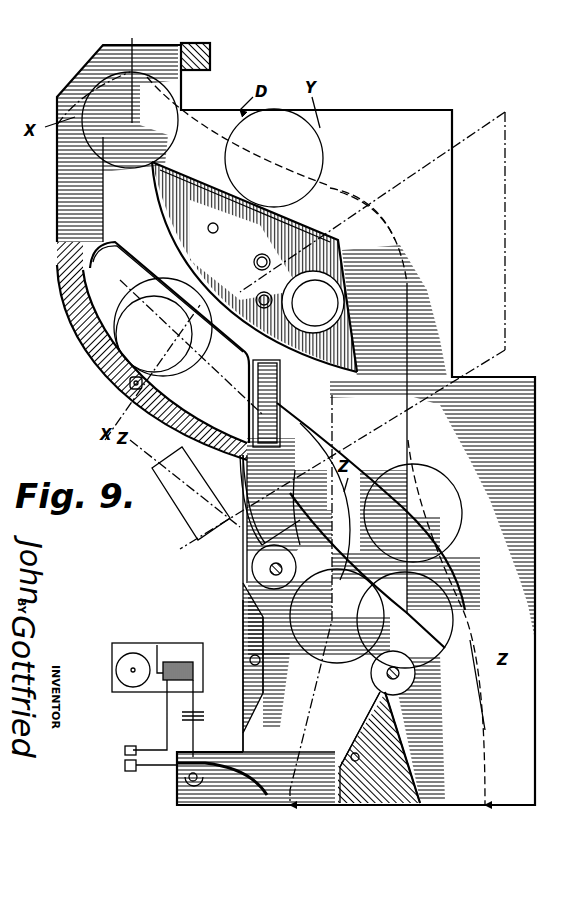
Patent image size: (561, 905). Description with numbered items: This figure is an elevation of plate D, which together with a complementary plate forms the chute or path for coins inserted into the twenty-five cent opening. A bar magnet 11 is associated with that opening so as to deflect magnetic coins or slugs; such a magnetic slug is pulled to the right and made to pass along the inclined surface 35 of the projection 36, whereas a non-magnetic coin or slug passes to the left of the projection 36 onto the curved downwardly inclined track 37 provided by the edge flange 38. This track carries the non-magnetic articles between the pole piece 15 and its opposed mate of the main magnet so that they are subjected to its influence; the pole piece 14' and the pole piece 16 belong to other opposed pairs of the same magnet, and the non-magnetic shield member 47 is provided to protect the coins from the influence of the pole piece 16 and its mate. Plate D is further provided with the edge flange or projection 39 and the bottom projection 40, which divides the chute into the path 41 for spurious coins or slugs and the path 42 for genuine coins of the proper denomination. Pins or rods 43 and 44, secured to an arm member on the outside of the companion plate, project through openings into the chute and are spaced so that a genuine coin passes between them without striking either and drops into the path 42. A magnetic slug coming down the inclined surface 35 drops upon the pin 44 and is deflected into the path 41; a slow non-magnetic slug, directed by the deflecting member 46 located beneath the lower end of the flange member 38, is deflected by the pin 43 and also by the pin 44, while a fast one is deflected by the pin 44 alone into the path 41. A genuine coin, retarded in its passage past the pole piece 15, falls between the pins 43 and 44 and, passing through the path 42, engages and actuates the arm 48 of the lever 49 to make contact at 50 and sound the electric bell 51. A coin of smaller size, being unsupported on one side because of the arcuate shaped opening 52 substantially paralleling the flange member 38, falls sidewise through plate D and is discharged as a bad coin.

The bar magnet 11 is at (212, 58).
The projection 36 is at (190, 197).
The inclined surface 35 is at (255, 275).
The pole piece 14' is at (329, 279).
The arcuate shaped opening 52 is at (96, 292).
The curved downwardly inclined track 37 is at (98, 325).
The edge flange 38 is at (128, 378).
The pole piece 16 is at (168, 458).
The pole piece 15 is at (268, 385).
The non-magnetic shield member 47 is at (241, 486).
The deflecting member 46 is at (252, 530).
The pin or rod 43 is at (254, 569).
The edge flange or projection 39 is at (245, 620).
The electric bell 51 is at (133, 686).
The contact 50 is at (124, 768).
The lever 49 is at (178, 770).
The arm 48 is at (257, 777).
The path for genuine coins 42 is at (372, 692).
The pin or rod 44 is at (394, 669).
The bottom projection 40 is at (400, 768).
The path for spurious coins 41 is at (467, 708).